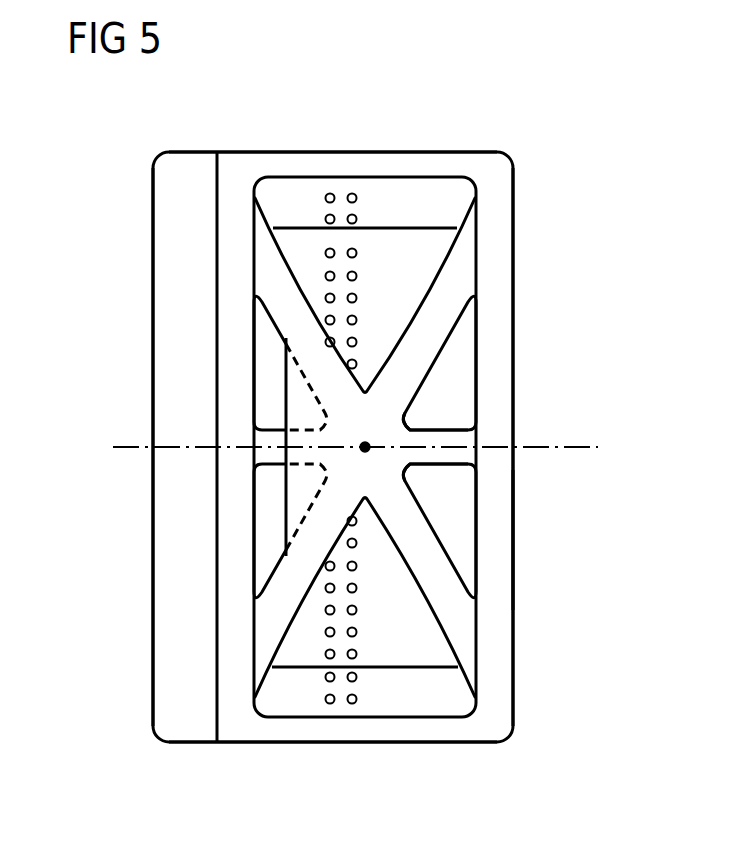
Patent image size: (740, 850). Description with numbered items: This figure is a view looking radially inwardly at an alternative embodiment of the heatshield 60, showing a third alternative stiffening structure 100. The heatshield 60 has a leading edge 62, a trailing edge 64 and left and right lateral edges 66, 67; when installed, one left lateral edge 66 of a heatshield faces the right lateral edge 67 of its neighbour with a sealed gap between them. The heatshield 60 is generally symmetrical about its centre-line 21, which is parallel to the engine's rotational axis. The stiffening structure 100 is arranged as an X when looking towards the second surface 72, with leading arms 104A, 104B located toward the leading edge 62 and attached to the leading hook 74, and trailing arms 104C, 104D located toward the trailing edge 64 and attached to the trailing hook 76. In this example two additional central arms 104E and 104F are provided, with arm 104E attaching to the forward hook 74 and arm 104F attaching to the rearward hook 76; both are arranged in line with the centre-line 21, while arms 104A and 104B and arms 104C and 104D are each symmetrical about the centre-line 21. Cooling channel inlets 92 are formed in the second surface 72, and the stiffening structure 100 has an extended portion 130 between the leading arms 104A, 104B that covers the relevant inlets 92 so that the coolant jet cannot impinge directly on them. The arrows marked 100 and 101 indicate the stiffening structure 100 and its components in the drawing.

The heatshield 60 is at (512, 99).
The left lateral edge 66 is at (284, 152).
The right lateral edge 67 is at (285, 743).
The leading edge 62 is at (152, 471).
The trailing edge 64 is at (513, 613).
The leading hook 74 is at (236, 714).
The trailing hook 76 is at (500, 537).
The centre-line 21 is at (588, 449).
The second surface 72 is at (399, 248).
The leading arm 104A is at (278, 593).
The leading arm 104B is at (275, 287).
The trailing arm 104C is at (458, 270).
The trailing arm 104D is at (458, 630).
The central arm 104E is at (265, 441).
The central arm 104F is at (458, 437).
The extended portion 130 is at (300, 385).
The stiffening structure 100 is at (452, 413).
The flow direction arrow 101 is at (452, 516).
The inlet 92 is at (357, 592).